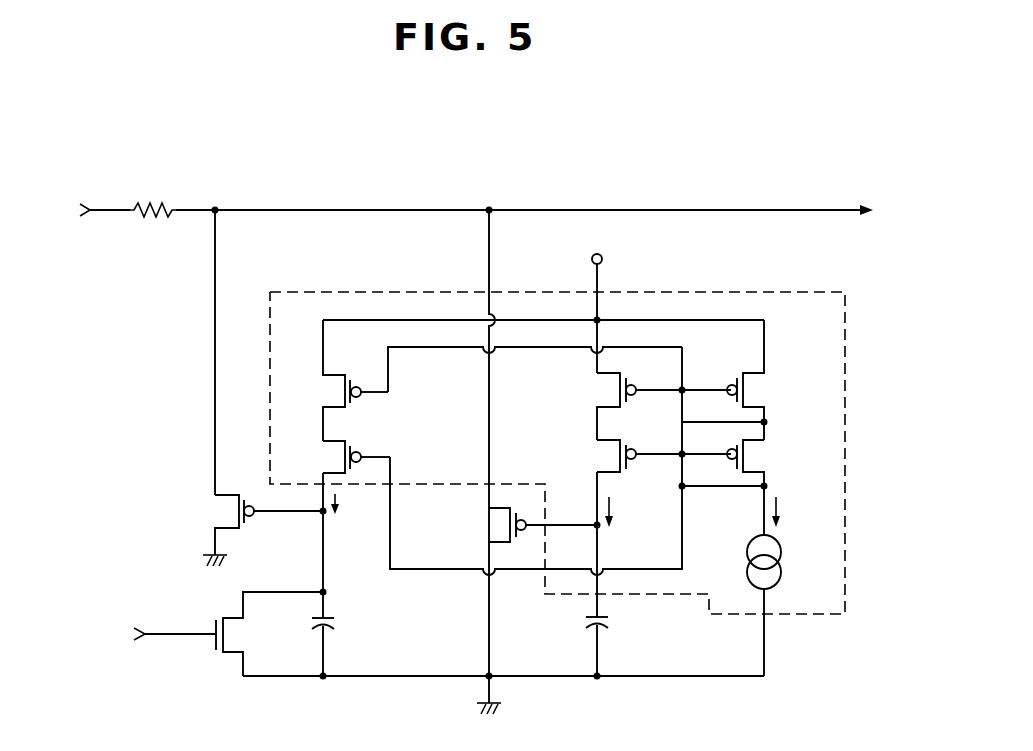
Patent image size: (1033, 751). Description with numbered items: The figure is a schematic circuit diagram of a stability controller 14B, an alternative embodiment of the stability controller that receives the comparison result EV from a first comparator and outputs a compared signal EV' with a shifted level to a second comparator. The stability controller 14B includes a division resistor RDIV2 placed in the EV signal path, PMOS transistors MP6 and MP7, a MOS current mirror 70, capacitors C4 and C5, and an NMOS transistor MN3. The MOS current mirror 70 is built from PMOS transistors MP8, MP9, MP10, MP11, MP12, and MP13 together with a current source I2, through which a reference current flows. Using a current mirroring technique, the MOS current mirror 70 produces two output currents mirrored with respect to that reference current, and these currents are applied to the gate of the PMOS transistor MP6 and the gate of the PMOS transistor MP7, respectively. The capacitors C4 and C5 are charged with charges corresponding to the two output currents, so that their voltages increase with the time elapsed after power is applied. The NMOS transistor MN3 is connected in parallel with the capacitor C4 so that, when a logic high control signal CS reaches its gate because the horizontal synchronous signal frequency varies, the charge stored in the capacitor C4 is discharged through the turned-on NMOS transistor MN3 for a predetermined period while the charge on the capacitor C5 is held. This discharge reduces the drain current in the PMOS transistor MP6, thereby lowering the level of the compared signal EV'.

The stability controller 14B is at (796, 167).
The MOS current mirror 70 is at (777, 291).
The division resistor RDIV2 is at (146, 196).
The PMOS transistor MP6 is at (246, 530).
The PMOS transistor MP7 is at (520, 525).
The PMOS transistor MP8 is at (333, 380).
The PMOS transistor MP9 is at (334, 457).
The PMOS transistor MP10 is at (634, 406).
The PMOS transistor MP11 is at (636, 456).
The PMOS transistor MP12 is at (774, 380).
The PMOS transistor MP13 is at (774, 463).
The NMOS transistor MN3 is at (234, 634).
The capacitor C4 is at (342, 624).
The capacitor C5 is at (616, 624).
The current source I2 is at (778, 562).